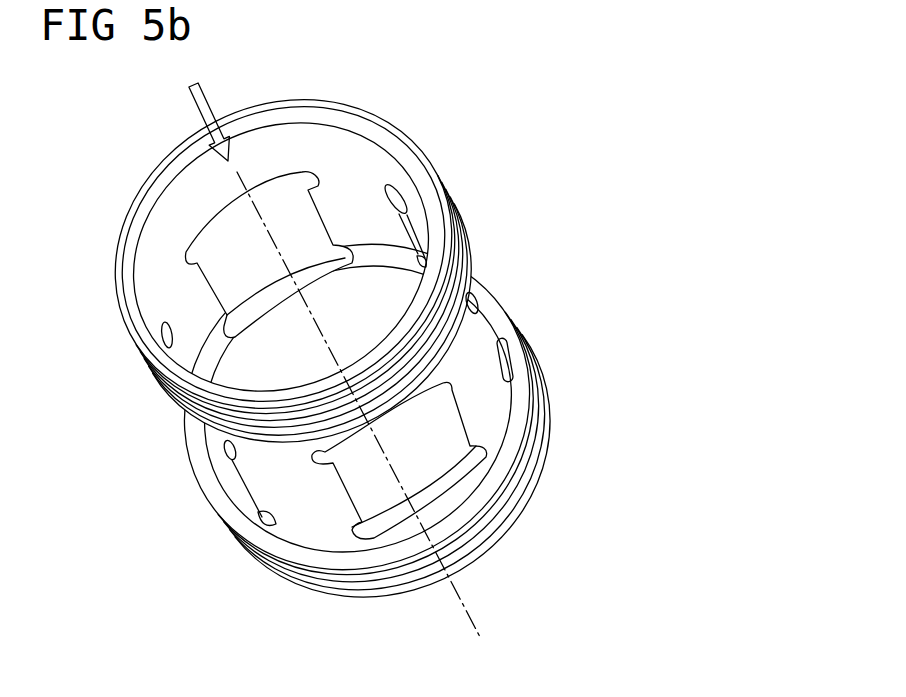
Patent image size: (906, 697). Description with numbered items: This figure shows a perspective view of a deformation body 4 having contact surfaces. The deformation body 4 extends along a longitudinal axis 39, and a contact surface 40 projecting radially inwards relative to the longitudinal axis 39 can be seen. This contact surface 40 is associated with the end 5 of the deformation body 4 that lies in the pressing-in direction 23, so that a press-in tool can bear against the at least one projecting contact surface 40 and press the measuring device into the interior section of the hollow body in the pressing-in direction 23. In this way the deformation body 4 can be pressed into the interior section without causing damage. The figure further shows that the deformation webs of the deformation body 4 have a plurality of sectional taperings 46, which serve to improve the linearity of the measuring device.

The deformation body 4 is at (522, 263).
The end of the deformation body 5 is at (236, 563).
The pressing-in direction 23 is at (207, 110).
The longitudinal axis 39 is at (455, 584).
The contact surface 40 is at (457, 484).
The sectional taperings 46 is at (397, 187).